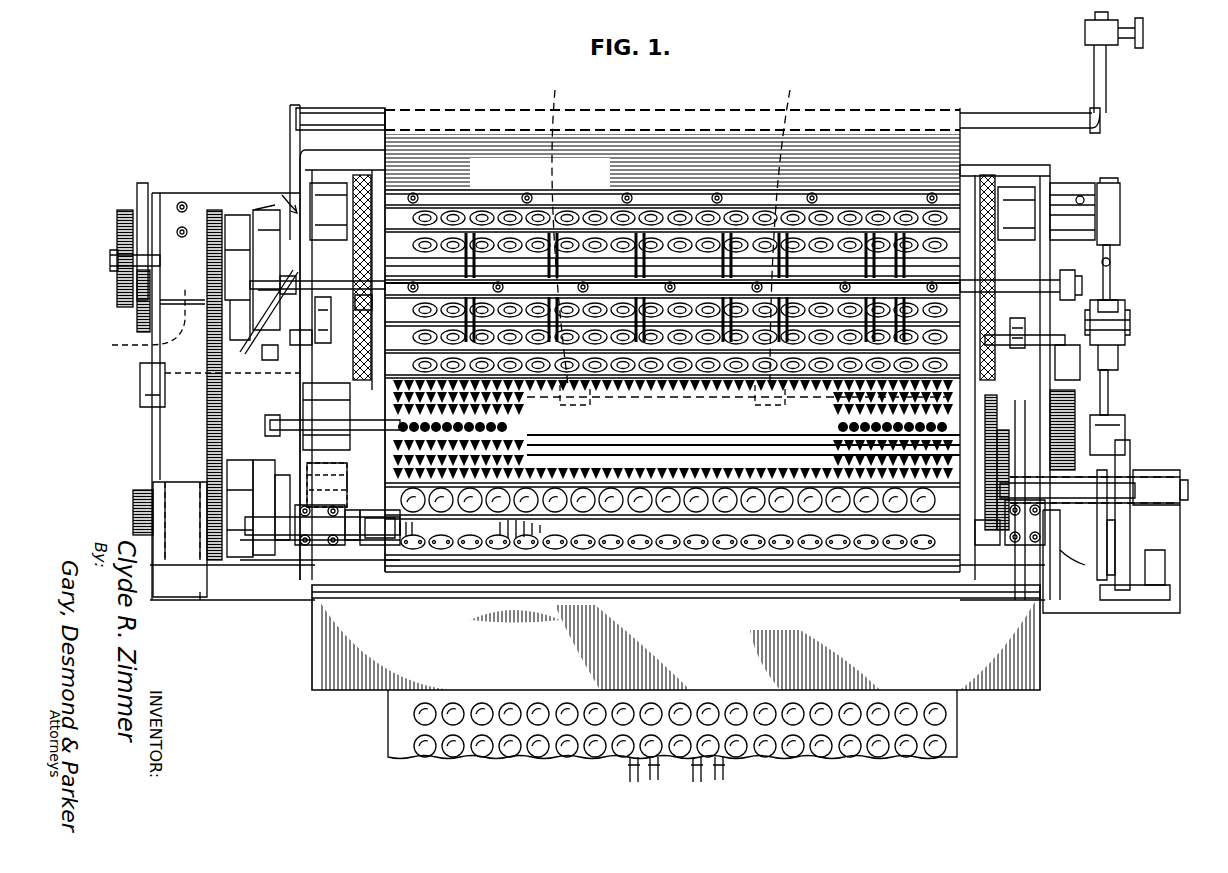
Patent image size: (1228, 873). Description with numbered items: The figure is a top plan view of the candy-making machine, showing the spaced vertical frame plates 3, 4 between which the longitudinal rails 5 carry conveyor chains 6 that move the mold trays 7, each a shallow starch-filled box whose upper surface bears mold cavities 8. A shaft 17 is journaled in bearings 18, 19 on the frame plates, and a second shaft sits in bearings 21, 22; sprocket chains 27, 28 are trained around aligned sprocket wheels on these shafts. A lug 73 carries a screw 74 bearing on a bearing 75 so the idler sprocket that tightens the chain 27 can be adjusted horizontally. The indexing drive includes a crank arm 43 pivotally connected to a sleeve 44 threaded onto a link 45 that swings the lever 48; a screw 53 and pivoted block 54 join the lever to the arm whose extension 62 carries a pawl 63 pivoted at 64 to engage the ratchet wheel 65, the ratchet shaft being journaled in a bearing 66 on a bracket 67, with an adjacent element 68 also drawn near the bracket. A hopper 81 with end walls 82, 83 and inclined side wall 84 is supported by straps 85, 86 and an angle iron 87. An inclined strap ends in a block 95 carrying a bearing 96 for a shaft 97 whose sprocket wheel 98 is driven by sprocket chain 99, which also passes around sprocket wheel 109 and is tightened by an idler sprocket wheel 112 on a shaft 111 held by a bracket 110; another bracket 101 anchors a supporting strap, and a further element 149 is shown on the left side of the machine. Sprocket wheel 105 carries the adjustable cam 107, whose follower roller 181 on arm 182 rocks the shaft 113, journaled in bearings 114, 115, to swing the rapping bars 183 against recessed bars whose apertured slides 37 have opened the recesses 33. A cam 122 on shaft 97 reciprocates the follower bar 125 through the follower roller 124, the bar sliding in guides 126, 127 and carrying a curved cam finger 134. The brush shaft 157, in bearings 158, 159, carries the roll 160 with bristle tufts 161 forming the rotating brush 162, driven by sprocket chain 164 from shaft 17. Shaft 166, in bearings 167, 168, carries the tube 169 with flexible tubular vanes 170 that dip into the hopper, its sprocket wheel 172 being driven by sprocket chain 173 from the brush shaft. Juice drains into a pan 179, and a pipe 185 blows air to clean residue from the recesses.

The frame plate 3 is at (282, 195).
The frame plate 4 is at (665, 120).
The longitudinal rails 5 is at (655, 770).
The conveyor chains 6 is at (632, 780).
The mold tray 7 is at (960, 740).
The mold indentations or cavities 8 is at (483, 748).
The shaft 17 is at (1188, 489).
The bearing 18 is at (336, 472).
The bearing 19 is at (1000, 535).
The bearing 21 is at (325, 195).
The bearing 22 is at (1016, 195).
The sprocket chain 27 is at (358, 266).
The sprocket chain 28 is at (995, 268).
The recess 33 is at (820, 232).
The apertured slide 37 is at (856, 218).
The crank arm 43 is at (1087, 186).
The sleeve 44 is at (1109, 232).
The link 45 is at (1108, 292).
The lever 48 is at (1112, 305).
The screw 53 is at (1110, 410).
The block 54 is at (1116, 430).
The extension 62 is at (1102, 530).
The pawl 63 is at (1122, 545).
The pivot 64 is at (1160, 567).
The ratchet wheel 65 is at (1122, 450).
The bearing 66 is at (1160, 470).
The bracket 67 is at (1160, 613).
The support 68 is at (1073, 557).
The lug 73 is at (334, 320).
The screw 74 is at (356, 292).
The bearing 75 is at (300, 338).
The hopper 81 is at (440, 72).
The end wall 82 is at (386, 140).
The end wall 83 is at (962, 138).
The inclined side wall 84 is at (740, 160).
The strap 85 is at (350, 392).
The strap 86 is at (1003, 360).
The angle iron 87 is at (362, 178).
The block 95 is at (138, 317).
The bearing 96 is at (160, 535).
The shaft 97 is at (135, 505).
The sprocket wheel 98 is at (238, 500).
The sprocket chain 99 is at (278, 424).
The bracket 101 is at (240, 218).
The sprocket wheel 105 is at (140, 283).
The cam 107 is at (145, 184).
The sprocket wheel 109 is at (222, 235).
The bracket 110 is at (252, 317).
The shaft 111 is at (260, 350).
The idler sprocket wheel 112 is at (235, 368).
The shaft 113 is at (140, 378).
The bearing 114 is at (283, 432).
The bearing 115 is at (1080, 370).
The cam 122 is at (245, 490).
The cam follower roller 124 is at (272, 570).
The follower bar 125 is at (345, 530).
The guide 126 is at (315, 547).
The guide 127 is at (1027, 523).
The cam finger 134 is at (383, 562).
The chain 149 is at (215, 210).
The shaft 157 is at (260, 470).
The bearing 158 is at (280, 482).
The bearing 159 is at (1056, 420).
The roll 160 is at (628, 452).
The tufts 161 is at (905, 532).
The rotating brush 162 is at (770, 512).
The sprocket chain 164 is at (978, 510).
The shaft 166 is at (1106, 262).
The bearing 167 is at (262, 212).
The bearing 168 is at (1106, 280).
The tube 169 is at (656, 292).
The tubular vanes 170 is at (478, 228).
The sprocket wheel 172 is at (1112, 323).
The sprocket chain 173 is at (1066, 353).
The pan 179 is at (698, 672).
The cam follower roller 181 is at (138, 245).
The arm 182 is at (160, 308).
The rapping bars 183 is at (680, 237).
The pipe 185 is at (1067, 113).